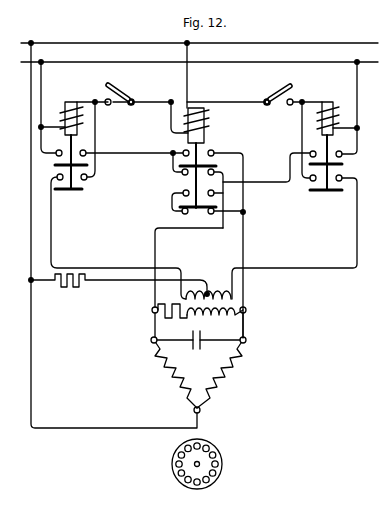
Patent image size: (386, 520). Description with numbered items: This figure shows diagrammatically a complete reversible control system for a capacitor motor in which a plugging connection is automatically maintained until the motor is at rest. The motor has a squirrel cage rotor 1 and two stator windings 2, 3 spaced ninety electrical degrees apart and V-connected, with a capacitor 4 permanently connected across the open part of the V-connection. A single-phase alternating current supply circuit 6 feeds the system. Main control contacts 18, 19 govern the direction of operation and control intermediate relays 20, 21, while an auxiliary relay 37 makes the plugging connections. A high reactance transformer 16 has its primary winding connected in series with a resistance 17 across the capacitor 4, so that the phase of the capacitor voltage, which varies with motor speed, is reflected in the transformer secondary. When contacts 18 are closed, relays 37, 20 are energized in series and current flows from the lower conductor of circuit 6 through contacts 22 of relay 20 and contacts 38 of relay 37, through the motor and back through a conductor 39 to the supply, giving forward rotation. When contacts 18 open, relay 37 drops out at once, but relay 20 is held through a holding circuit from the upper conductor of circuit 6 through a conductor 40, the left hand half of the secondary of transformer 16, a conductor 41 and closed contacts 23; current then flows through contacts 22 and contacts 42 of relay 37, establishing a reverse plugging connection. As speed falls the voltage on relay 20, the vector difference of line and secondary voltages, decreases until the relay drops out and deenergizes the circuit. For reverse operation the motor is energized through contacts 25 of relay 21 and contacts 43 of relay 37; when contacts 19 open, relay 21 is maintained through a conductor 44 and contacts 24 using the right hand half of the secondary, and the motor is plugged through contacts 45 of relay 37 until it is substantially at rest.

The rotor 1 is at (221, 458).
The stator winding 2 is at (170, 384).
The stator winding 3 is at (220, 386).
The capacitor 4 is at (197, 351).
The single-phase alternating current supply circuit 6 is at (63, 61).
The reactance transformer 16 is at (236, 300).
The resistance 17 is at (172, 321).
The main control contacts 18 is at (126, 94).
The main control contacts 19 is at (279, 93).
The intermediate relay 20 is at (73, 100).
The intermediate relay 21 is at (327, 100).
The contacts of relay 20 22 is at (66, 150).
The contacts of relay 20 23 is at (87, 179).
The contacts of relay 21 24 is at (344, 176).
The contacts of relay 21 25 is at (322, 149).
The auxiliary relay 37 is at (207, 121).
The contacts of relay 37 38 is at (214, 152).
The conductor 39 is at (103, 429).
The conductor 40 is at (117, 281).
The conductor 41 is at (117, 267).
The contacts of relay 37 42 is at (180, 173).
The contacts of relay 37 43 is at (182, 193).
The conductor 44 is at (296, 267).
The contacts of relay 37 45 is at (206, 213).